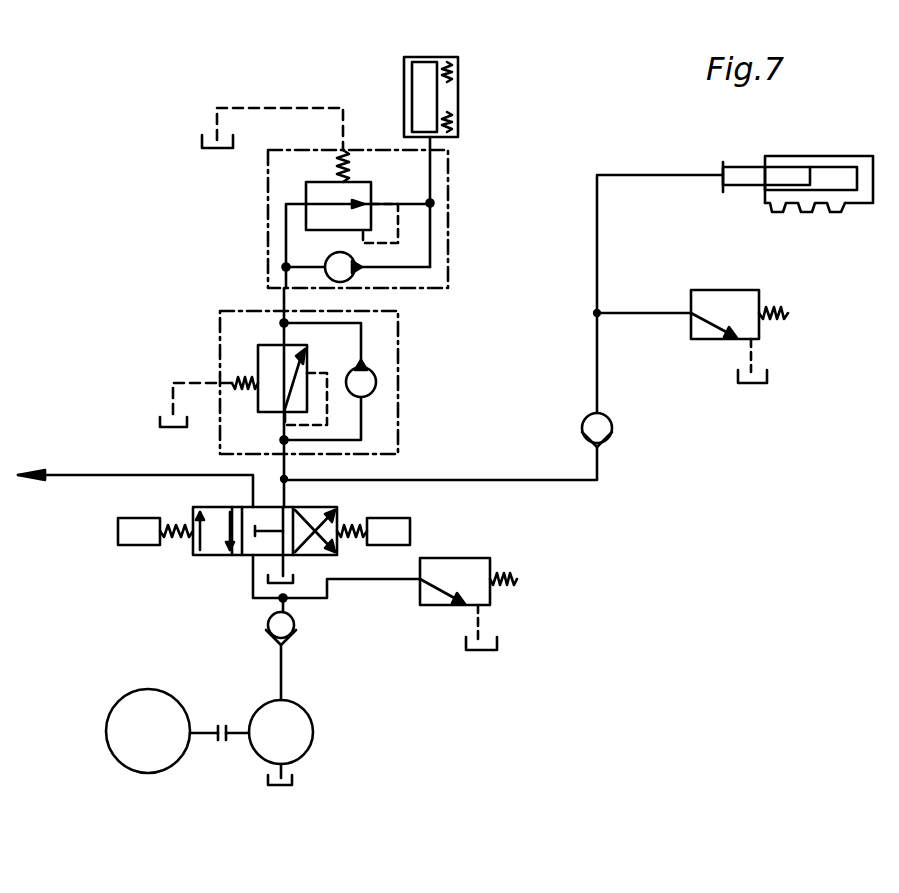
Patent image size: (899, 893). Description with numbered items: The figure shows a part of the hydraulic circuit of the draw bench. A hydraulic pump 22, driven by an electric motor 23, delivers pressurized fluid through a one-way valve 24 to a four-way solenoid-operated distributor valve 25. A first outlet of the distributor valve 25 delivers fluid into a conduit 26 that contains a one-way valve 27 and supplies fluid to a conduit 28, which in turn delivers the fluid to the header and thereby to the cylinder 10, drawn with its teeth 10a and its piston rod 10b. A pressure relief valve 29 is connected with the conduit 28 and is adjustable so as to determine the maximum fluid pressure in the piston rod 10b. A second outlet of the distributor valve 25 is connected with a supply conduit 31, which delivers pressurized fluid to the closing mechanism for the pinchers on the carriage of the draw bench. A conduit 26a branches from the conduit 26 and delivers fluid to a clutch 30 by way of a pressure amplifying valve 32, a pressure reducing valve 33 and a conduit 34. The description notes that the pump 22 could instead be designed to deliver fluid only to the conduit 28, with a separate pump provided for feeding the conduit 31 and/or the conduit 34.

The cylinder 10 is at (798, 210).
The teeth 10a is at (805, 221).
The piston rod 10b is at (766, 213).
The hydraulic pump 22 is at (318, 742).
The electric motor 23 is at (177, 694).
The one-way valve 24 is at (326, 649).
The four-way solenoid-operated distributor valve 25 is at (264, 535).
The conduit 26 is at (440, 448).
The conduit 26a is at (290, 468).
The one-way valve 27 is at (573, 430).
The conduit 28 is at (630, 294).
The pressure relief valve 29 is at (692, 312).
The clutch 30 is at (486, 97).
The supply conduit 31 is at (135, 458).
The pressure amplifying valve 32 is at (277, 382).
The pressure reducing valve 33 is at (304, 198).
The conduit 34 is at (496, 202).